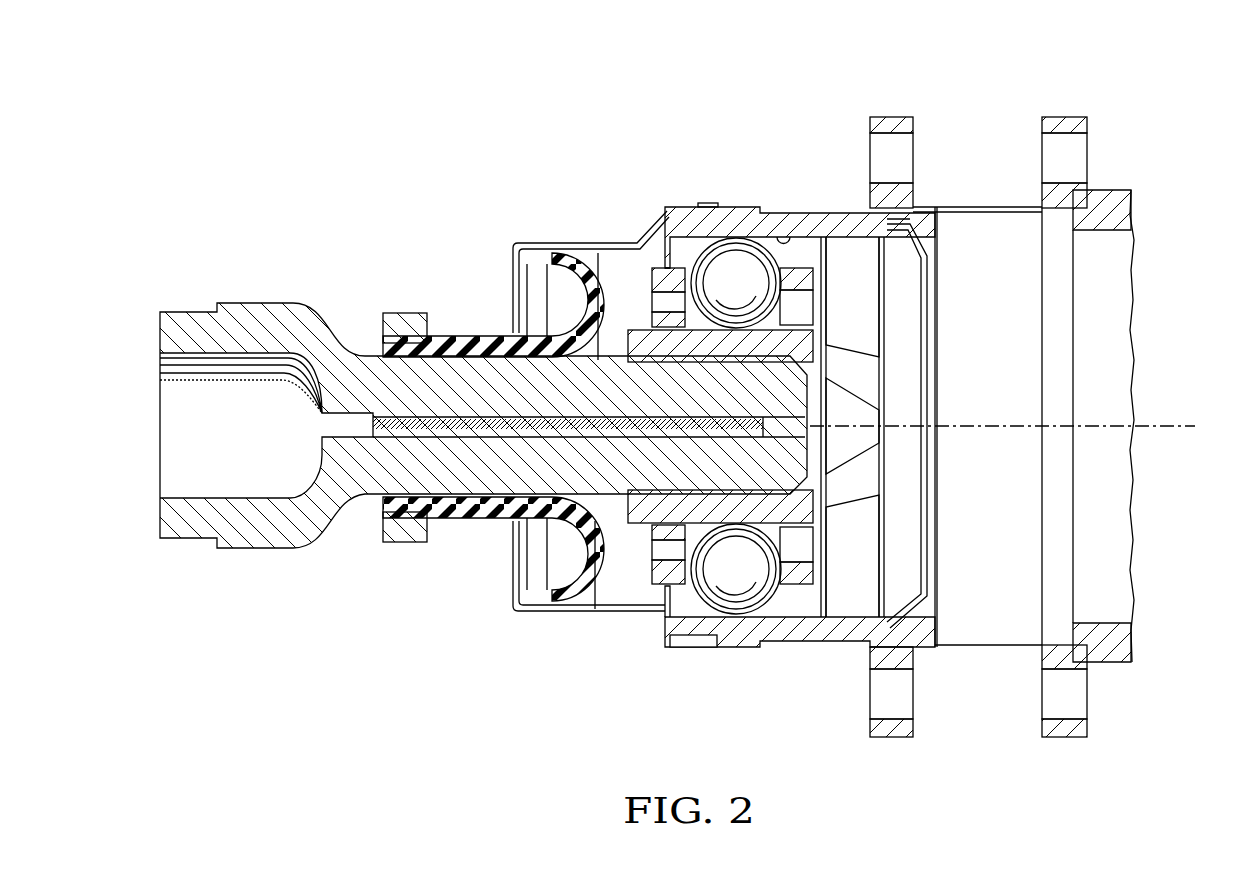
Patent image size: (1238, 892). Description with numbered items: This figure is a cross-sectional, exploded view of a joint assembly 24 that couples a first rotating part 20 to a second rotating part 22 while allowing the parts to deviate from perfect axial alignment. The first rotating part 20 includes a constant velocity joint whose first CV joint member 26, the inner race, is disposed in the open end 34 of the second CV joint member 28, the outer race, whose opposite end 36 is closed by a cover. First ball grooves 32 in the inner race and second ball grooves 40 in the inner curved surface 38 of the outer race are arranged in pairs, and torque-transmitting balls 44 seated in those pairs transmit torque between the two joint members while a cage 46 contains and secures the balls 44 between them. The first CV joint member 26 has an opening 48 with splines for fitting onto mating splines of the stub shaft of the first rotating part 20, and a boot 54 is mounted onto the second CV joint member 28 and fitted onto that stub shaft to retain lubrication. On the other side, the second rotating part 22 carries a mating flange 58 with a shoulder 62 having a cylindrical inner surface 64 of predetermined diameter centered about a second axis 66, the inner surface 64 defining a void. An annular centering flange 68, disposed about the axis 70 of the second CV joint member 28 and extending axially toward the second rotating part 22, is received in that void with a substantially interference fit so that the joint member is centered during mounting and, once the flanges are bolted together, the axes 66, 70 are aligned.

The first rotating part 20 is at (258, 555).
The second rotating part 22 is at (1113, 380).
The joint assembly 24 is at (345, 178).
The first CV joint member 26 is at (594, 592).
The second CV joint member 28 is at (775, 637).
The first ball grooves 32 is at (673, 322).
The open end 34 is at (662, 230).
The opposite end 36 is at (938, 395).
The inner curved surface 38 is at (777, 232).
The second ball grooves 40 is at (678, 248).
The torque-transmitting balls 44 is at (720, 237).
The cage 46 is at (838, 622).
The opening 48 is at (717, 483).
The boot 54 is at (478, 530).
The mating flange 58 is at (1068, 115).
The shoulder 62 is at (1042, 198).
The cylindrical inner surface 64 is at (1040, 212).
The second axis 66 is at (1135, 455).
The centering flange 68 is at (932, 207).
The axis 70 is at (955, 445).